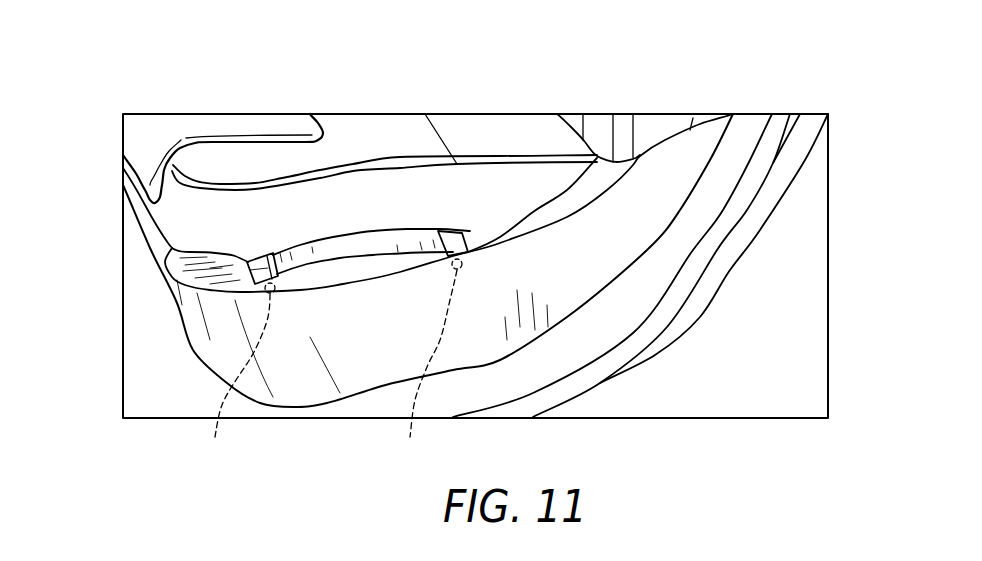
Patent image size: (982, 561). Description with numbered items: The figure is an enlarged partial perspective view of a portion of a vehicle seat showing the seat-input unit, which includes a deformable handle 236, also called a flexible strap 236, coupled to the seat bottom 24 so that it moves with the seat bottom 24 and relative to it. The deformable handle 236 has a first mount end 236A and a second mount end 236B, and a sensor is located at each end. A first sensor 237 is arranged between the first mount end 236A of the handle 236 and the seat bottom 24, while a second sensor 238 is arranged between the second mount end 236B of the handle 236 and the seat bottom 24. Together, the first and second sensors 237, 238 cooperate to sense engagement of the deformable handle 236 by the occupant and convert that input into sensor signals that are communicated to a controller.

The seat bottom 24 is at (143, 137).
The deformable handle 236 is at (335, 230).
The first mount end 236A is at (262, 270).
The second mount end 236B is at (457, 241).
The first sensor 237 is at (234, 377).
The second sensor 238 is at (425, 365).